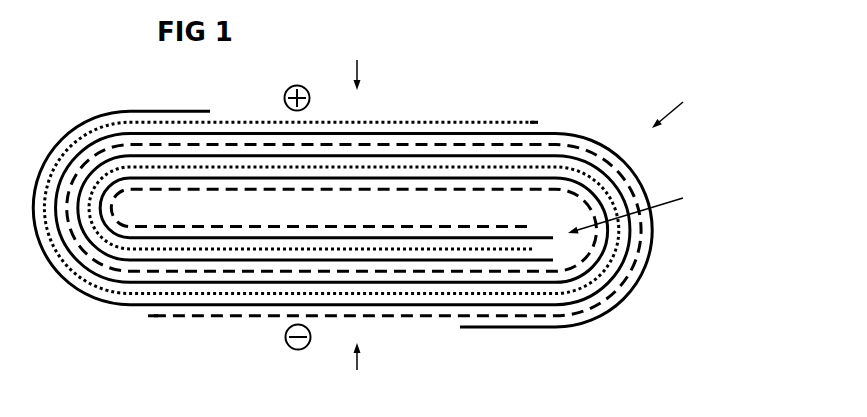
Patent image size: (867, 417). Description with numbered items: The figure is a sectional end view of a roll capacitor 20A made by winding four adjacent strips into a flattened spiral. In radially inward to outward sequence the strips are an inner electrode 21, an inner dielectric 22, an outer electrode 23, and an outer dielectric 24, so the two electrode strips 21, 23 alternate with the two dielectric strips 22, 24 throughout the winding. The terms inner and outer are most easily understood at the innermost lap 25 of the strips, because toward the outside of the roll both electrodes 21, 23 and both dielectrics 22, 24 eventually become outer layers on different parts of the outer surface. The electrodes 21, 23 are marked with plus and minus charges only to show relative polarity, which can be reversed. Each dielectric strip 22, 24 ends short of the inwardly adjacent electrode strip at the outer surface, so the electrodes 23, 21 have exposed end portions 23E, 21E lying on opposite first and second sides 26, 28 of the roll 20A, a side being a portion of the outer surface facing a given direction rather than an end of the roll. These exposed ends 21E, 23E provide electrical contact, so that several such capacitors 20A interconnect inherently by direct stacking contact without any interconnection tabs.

The roll capacitor 20A is at (691, 104).
The inner electrode strip 21 is at (502, 144).
The exposed end portion of inner electrode 21E is at (400, 318).
The inner dielectric strip 22 is at (445, 237).
The outer electrode strip 23 is at (378, 248).
The exposed end portion of outer electrode 23E is at (407, 122).
The outer dielectric strip 24 is at (114, 110).
The innermost lap 25 is at (644, 208).
The first side of roll 26 is at (359, 62).
The second side of roll 28 is at (359, 373).